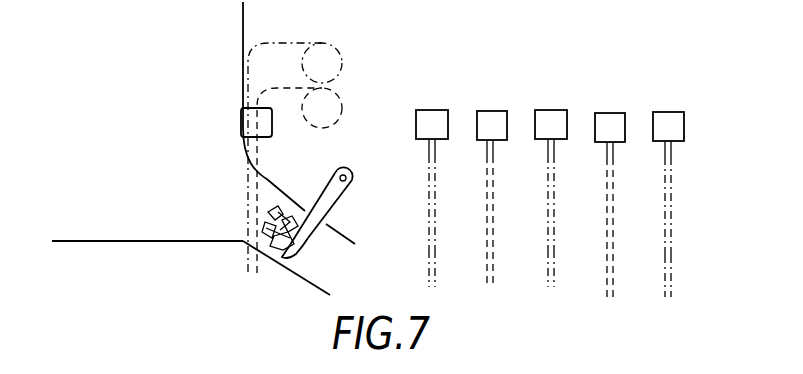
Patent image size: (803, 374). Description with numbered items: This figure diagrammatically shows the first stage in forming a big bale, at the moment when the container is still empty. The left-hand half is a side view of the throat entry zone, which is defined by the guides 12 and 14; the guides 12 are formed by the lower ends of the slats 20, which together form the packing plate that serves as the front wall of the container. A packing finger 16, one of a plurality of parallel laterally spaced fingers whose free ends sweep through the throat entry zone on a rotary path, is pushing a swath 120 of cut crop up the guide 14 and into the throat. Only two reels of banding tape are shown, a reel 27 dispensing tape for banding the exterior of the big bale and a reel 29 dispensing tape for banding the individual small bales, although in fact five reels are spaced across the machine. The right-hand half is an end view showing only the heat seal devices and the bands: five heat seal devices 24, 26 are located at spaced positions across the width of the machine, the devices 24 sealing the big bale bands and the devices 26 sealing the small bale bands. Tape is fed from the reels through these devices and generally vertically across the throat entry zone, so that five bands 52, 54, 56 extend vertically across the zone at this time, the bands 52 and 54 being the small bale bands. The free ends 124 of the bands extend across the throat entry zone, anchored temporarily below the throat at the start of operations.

The slats 20 is at (243, 20).
The reels of banding tape 27 is at (340, 55).
The reels of banding tape 29 is at (338, 97).
The swath 120 is at (285, 216).
The guides 12 is at (329, 225).
The packing fingers 16 is at (313, 238).
The guides 14 is at (297, 278).
The free ends of the bands 124 is at (243, 273).
The heat sealing devices 24 is at (432, 124).
The heat sealing devices 26 is at (562, 188).
The band 52 is at (494, 215).
The band 54 is at (611, 217).
The bands 56 is at (433, 283).